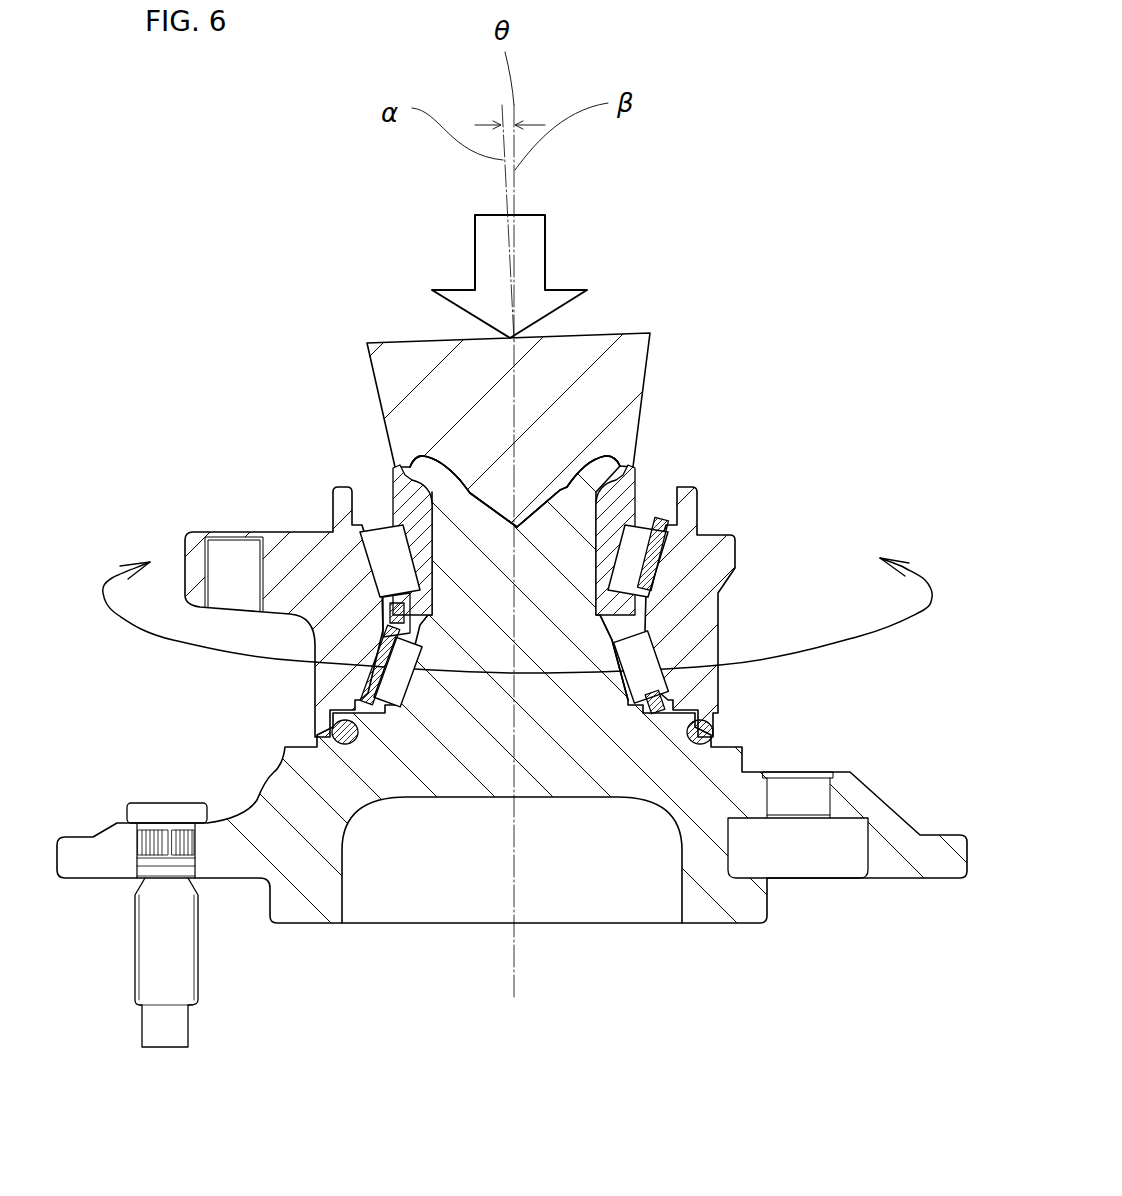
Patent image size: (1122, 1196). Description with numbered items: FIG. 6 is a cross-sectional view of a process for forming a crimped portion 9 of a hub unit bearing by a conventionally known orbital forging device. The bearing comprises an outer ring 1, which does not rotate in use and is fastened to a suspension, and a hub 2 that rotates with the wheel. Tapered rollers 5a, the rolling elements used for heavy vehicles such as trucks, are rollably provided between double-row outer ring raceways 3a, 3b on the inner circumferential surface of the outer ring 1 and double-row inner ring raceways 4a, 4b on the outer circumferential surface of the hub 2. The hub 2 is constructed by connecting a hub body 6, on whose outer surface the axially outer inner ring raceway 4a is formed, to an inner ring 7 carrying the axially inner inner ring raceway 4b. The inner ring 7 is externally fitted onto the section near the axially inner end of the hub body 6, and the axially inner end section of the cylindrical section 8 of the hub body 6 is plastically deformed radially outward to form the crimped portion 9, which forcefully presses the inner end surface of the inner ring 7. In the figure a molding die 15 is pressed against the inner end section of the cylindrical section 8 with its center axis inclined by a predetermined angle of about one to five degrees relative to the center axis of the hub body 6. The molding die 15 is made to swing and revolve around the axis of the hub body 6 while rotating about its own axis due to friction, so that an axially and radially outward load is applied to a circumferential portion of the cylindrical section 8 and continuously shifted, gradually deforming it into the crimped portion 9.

The outer ring 1 is at (282, 524).
The hub 2 is at (258, 790).
The outer ring raceway 3a is at (385, 685).
The outer ring raceway 3b is at (383, 543).
The inner ring raceway 4a is at (397, 705).
The inner ring raceway 4b is at (380, 543).
The tapered rollers 5a is at (375, 520).
The hub body 6 is at (572, 738).
The inner ring 7 is at (622, 495).
The cylindrical section 8 is at (583, 492).
The crimped portion 9 is at (425, 450).
The molding die 15 is at (558, 375).